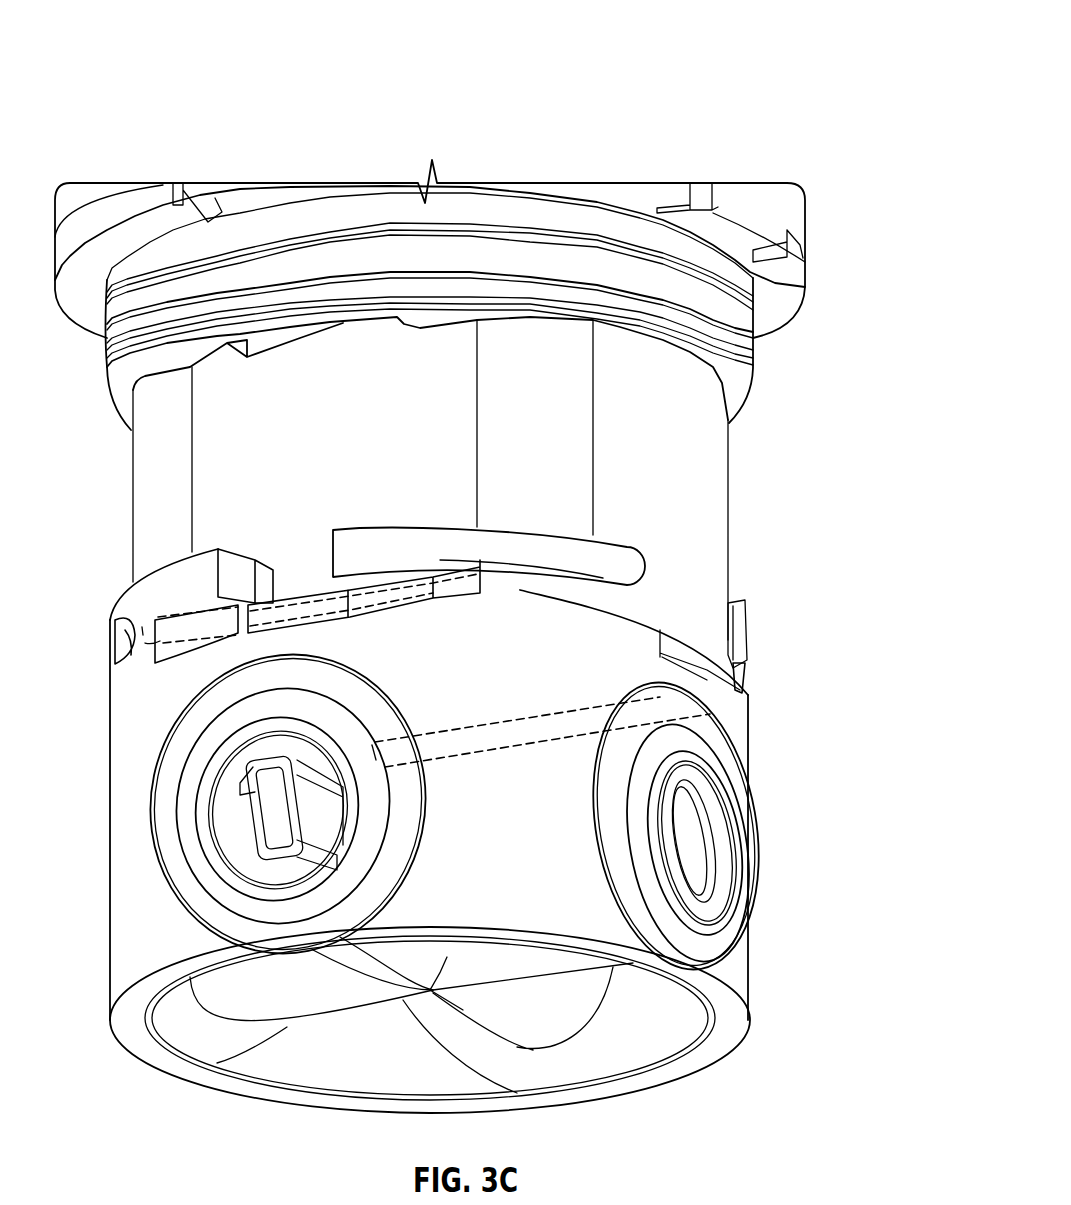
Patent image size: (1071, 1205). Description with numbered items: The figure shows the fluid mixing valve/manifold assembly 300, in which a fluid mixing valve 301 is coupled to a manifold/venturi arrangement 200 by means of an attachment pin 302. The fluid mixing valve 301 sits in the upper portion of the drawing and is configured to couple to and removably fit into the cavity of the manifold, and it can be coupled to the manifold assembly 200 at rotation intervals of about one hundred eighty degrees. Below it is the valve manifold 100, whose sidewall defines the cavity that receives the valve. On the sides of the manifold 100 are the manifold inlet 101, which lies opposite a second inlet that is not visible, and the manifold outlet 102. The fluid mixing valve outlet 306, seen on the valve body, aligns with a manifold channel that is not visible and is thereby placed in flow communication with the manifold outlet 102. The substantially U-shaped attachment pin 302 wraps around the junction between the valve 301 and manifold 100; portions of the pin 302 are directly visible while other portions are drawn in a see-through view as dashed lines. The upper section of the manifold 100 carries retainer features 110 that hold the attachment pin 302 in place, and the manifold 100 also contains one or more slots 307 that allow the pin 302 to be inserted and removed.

The fluid mixing valve/manifold assembly 300 is at (841, 54).
The fluid mixing valve 301 is at (835, 182).
The valve manifold/venturi assembly 200 is at (835, 663).
The valve manifold 100 is at (120, 787).
The manifold inlet 101 is at (690, 860).
The manifold outlet 102 is at (227, 847).
The retainer features 110 is at (634, 576).
The attachment pin 302 is at (310, 590).
The fluid mixing valve outlet 306 is at (345, 328).
The slots 307 is at (108, 658).